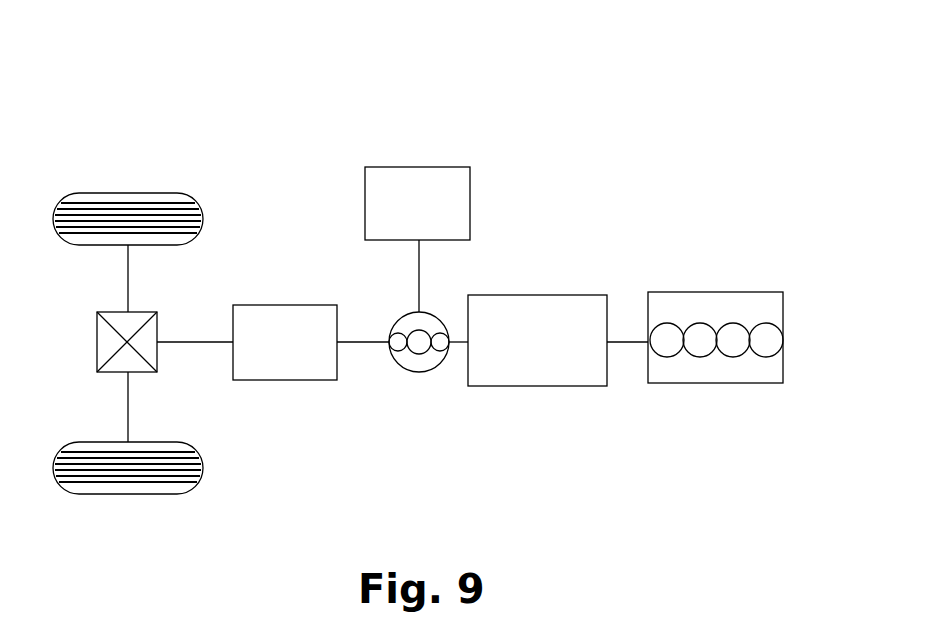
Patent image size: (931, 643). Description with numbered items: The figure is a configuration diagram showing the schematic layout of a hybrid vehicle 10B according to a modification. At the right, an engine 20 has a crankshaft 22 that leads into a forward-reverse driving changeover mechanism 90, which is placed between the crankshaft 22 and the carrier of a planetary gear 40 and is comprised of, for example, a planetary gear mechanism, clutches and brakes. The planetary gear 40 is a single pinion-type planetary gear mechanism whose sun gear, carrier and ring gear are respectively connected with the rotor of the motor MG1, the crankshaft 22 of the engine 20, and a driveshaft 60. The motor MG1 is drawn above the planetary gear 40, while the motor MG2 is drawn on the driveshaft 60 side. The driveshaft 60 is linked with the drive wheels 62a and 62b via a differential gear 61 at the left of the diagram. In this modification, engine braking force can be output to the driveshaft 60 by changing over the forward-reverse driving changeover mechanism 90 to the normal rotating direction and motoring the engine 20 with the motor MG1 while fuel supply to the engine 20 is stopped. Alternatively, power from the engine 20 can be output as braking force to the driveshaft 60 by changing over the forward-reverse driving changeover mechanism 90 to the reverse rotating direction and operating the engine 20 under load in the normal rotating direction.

The hybrid vehicle 10B is at (206, 55).
The drive wheel 62a is at (128, 190).
The drive wheel 62b is at (129, 496).
The differential gear 61 is at (97, 340).
The driveshaft 60 is at (189, 344).
The motor MG2 is at (274, 381).
The motor MG1 is at (470, 203).
The planetary gear 40 is at (436, 313).
The forward-reverse driving changeover mechanism 90 is at (560, 295).
The crankshaft 22 is at (621, 344).
The engine 20 is at (783, 338).